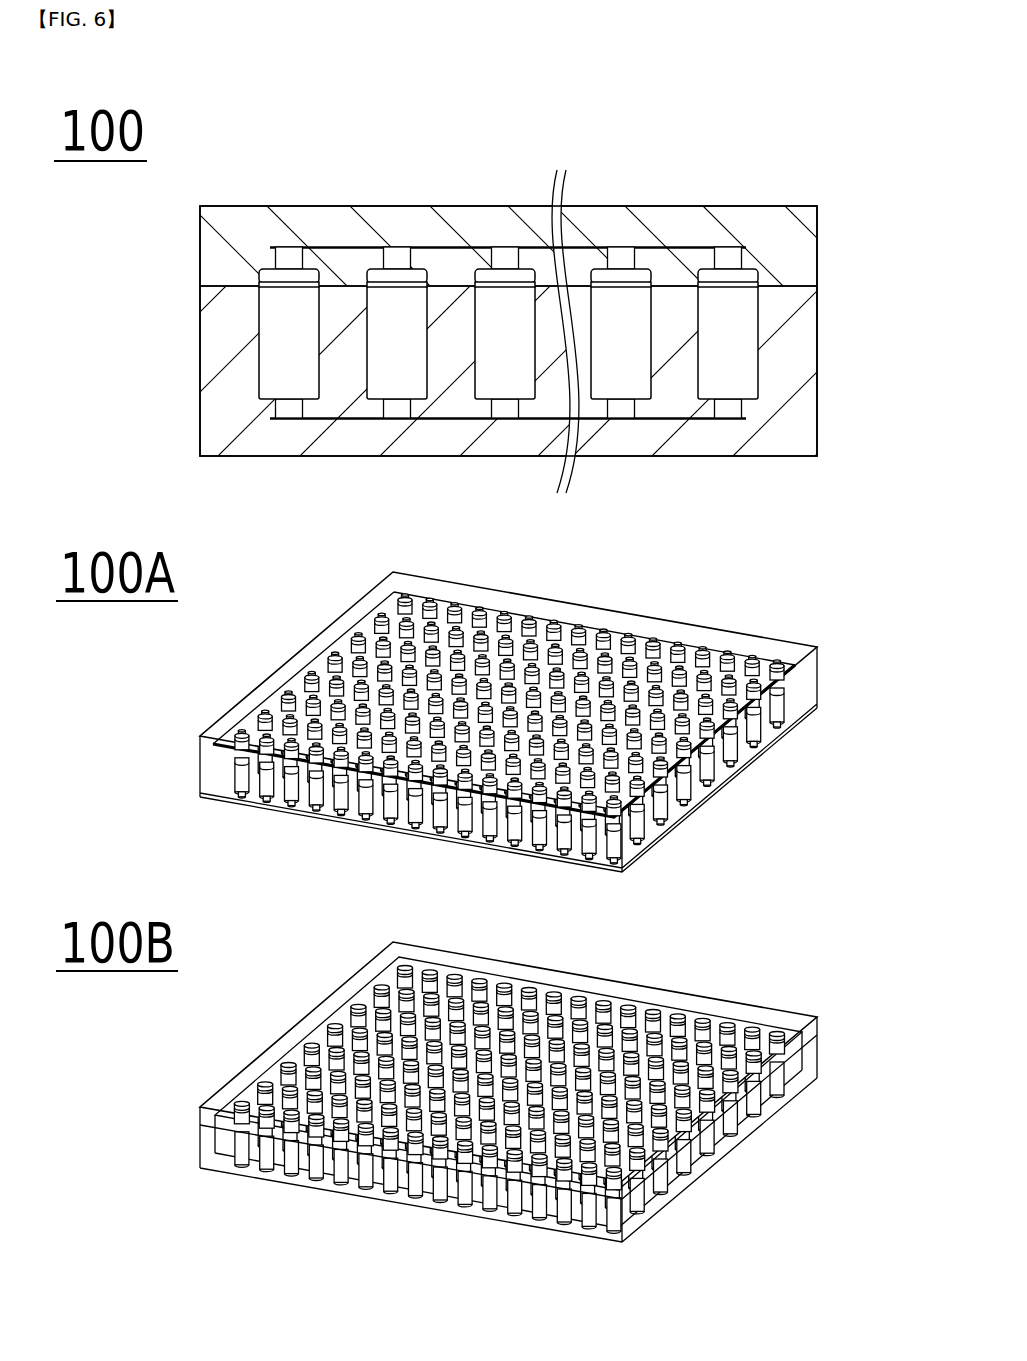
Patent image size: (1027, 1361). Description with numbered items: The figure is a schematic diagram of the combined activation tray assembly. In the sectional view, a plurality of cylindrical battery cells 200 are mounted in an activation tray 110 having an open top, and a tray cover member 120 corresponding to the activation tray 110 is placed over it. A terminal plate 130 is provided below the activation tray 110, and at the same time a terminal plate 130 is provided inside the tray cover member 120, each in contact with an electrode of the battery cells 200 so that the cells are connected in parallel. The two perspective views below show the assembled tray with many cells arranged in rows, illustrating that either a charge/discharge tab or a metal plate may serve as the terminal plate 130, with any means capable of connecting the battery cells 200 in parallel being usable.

The activation tray 110 is at (805, 352).
The tray cover member 120 is at (805, 254).
The terminal plate 130 is at (292, 258).
The cylindrical battery cell 200 is at (270, 342).